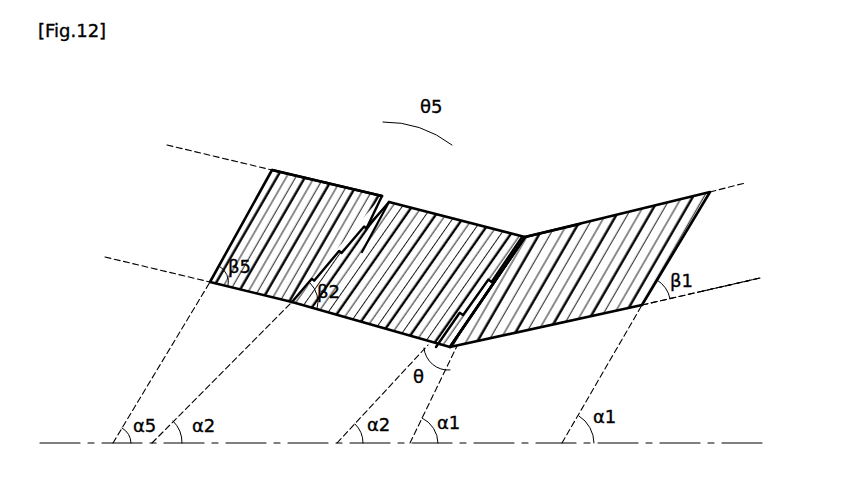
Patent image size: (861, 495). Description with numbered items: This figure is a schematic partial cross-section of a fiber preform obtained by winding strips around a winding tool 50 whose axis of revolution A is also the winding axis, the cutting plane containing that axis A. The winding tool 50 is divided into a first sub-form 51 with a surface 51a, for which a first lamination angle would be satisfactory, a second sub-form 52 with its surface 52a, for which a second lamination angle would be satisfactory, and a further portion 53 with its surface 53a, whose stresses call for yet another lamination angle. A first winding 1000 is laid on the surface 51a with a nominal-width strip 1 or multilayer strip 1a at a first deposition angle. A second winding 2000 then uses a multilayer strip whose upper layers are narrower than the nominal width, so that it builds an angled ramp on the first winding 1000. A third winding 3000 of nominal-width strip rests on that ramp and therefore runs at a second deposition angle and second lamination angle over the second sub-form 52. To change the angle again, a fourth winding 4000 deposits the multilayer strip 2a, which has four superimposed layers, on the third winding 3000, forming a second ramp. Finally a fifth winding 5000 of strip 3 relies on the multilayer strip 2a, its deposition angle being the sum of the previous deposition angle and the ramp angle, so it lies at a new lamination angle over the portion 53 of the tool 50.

The strip 1 is at (476, 215).
The multilayer strip 1a is at (535, 232).
The multilayer strip 2a is at (368, 205).
The strip 3 is at (247, 212).
The first winding 1000 is at (626, 212).
The second winding 2000 is at (519, 234).
The third winding 3000 is at (441, 212).
The fourth winding 4000 is at (351, 188).
The fifth winding 5000 is at (273, 171).
The winding tool 50 is at (744, 312).
The first sub-form 51 is at (753, 281).
The surface 51a is at (718, 287).
The second sub-form 52 is at (337, 418).
The surface of the second sub-form 52a is at (352, 321).
The portion 53 is at (150, 287).
The surface of portion 53 53a is at (201, 305).
The axis of revolution A is at (405, 458).